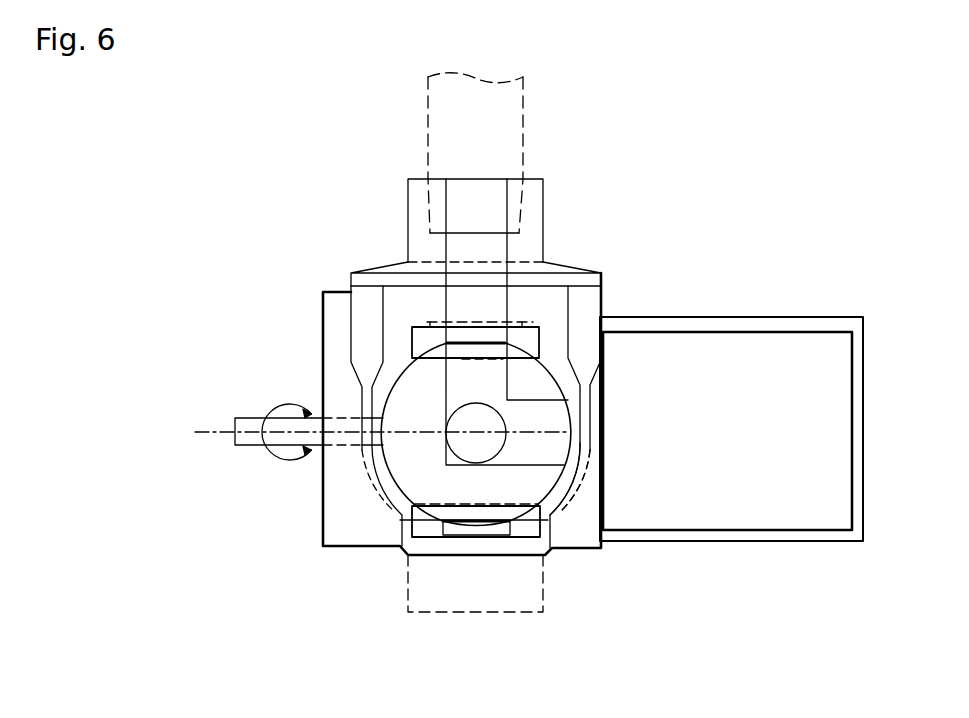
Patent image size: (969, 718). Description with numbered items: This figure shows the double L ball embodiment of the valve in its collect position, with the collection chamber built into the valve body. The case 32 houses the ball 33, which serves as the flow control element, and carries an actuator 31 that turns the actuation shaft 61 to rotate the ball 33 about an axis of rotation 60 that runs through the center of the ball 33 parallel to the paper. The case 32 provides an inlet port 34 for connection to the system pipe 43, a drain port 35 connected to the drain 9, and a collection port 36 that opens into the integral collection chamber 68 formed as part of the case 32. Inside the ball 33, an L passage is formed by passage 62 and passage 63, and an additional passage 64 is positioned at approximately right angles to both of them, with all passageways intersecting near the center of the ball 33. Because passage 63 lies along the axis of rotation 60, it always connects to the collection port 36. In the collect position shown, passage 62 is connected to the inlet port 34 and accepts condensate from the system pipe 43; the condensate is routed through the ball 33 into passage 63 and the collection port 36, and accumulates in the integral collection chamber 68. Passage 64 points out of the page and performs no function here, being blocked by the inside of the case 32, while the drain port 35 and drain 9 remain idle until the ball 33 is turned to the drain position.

The drain 9 is at (508, 600).
The actuator 31 is at (412, 355).
The valve body or case 32 is at (310, 300).
The ball 33 is at (537, 386).
The inlet port 34 is at (502, 322).
The drain port 35 is at (448, 535).
The collection port 36 is at (530, 445).
The system pipe 43 is at (475, 208).
The axis of rotation 60 is at (305, 435).
The actuation shaft 61 is at (245, 428).
The passage 62 is at (467, 382).
The passage 63 is at (573, 457).
The additional passage 64 is at (482, 455).
The integral collection chamber 68 is at (731, 429).